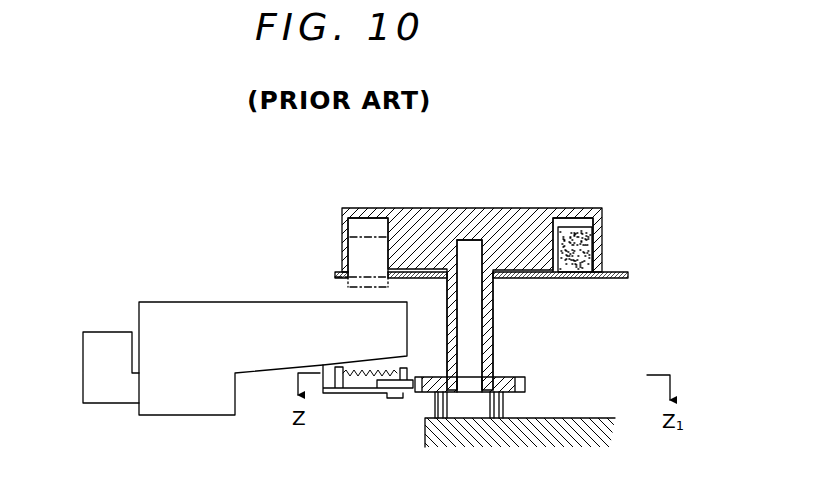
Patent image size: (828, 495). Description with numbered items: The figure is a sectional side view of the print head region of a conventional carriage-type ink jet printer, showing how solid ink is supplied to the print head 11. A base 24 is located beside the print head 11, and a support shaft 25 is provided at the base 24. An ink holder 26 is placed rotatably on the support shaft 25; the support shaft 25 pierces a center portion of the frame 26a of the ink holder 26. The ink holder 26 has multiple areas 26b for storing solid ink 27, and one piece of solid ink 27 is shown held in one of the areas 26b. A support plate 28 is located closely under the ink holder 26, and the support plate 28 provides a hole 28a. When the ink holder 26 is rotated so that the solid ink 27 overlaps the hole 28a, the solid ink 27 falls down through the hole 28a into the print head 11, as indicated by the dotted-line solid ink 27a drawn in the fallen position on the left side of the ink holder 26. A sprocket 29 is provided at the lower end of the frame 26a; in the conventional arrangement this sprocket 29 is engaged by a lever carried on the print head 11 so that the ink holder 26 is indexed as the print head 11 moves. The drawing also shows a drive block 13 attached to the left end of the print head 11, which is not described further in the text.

The print head 11 is at (245, 300).
The drive block 13 is at (103, 335).
The base 24 is at (580, 417).
The support shaft 25 is at (470, 327).
The ink holder 26 is at (483, 207).
The frame 26a is at (495, 350).
The areas 26b is at (372, 225).
The solid ink 27 is at (580, 247).
The dotted-line solid ink 27a is at (357, 245).
The support plate 28 is at (610, 280).
The hole 28a is at (363, 275).
The sprocket 29 is at (413, 395).